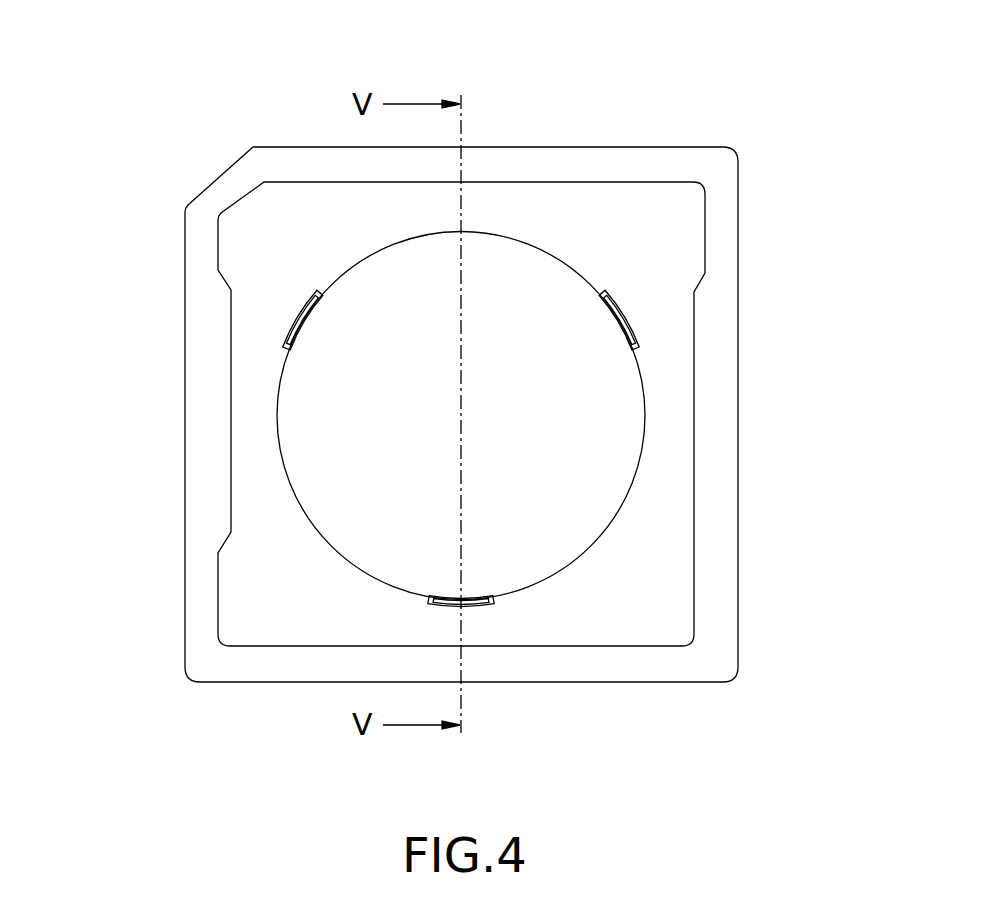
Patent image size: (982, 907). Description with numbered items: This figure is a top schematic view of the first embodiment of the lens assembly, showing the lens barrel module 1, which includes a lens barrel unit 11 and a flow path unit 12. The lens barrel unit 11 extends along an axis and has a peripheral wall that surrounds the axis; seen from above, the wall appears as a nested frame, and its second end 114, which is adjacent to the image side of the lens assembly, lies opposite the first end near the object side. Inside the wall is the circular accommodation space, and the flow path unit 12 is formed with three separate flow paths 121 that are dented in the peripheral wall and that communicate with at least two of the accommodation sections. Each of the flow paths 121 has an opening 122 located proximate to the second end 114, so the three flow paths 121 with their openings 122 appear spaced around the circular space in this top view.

The lens barrel module 1 is at (225, 140).
The lens barrel unit 11 is at (326, 160).
The second end 114 is at (652, 160).
The flow path unit 12 is at (300, 316).
The flow path 121 is at (630, 322).
The opening 122 is at (283, 340).